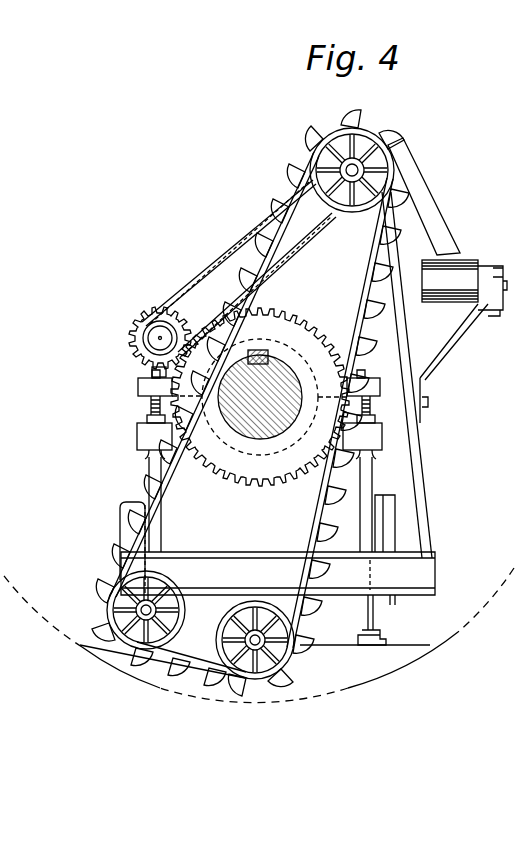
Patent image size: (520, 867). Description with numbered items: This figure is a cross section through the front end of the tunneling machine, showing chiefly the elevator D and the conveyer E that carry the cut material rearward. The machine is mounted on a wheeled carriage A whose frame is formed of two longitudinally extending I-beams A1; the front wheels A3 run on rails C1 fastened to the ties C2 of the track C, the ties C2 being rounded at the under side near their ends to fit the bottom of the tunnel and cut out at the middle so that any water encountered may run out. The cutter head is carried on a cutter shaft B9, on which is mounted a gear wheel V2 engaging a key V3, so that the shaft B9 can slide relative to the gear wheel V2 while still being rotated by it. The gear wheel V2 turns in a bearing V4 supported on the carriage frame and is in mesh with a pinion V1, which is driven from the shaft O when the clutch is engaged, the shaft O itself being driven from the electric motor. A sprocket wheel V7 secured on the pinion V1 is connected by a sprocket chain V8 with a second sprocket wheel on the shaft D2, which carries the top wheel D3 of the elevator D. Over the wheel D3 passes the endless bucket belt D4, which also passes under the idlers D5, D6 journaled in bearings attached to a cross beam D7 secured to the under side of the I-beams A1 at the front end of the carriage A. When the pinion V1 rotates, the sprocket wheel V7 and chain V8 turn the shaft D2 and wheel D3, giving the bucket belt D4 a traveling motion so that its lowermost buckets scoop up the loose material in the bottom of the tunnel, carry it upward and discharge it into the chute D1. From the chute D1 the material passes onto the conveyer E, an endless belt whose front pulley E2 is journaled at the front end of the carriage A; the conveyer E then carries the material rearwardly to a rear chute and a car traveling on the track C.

The elevator D is at (291, 163).
The chute D1 is at (426, 182).
The shaft D2 is at (352, 168).
The top wheel D3 is at (343, 214).
The endless bucket belt D4 is at (357, 327).
The idler D5 is at (268, 672).
The idler D6 is at (112, 604).
The cross beam D7 is at (214, 592).
The conveyer E is at (457, 258).
The pulley E2 is at (473, 262).
The pinion V1 is at (138, 326).
The gear wheel V2 is at (302, 320).
The key V3 is at (262, 351).
The bearing V4 is at (384, 437).
The sprocket wheel V7 is at (214, 318).
The sprocket chain V8 is at (208, 268).
The shaft O is at (160, 340).
The wheeled carriage A is at (233, 411).
The I-beams A1 is at (150, 462).
The front wheels A3 is at (130, 518).
The cutter shaft B9 is at (265, 428).
The track C is at (257, 635).
The rails C1 is at (393, 629).
The ties C2 is at (343, 655).